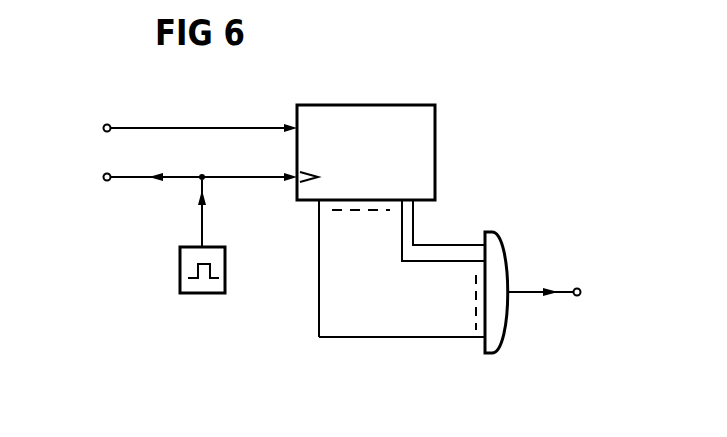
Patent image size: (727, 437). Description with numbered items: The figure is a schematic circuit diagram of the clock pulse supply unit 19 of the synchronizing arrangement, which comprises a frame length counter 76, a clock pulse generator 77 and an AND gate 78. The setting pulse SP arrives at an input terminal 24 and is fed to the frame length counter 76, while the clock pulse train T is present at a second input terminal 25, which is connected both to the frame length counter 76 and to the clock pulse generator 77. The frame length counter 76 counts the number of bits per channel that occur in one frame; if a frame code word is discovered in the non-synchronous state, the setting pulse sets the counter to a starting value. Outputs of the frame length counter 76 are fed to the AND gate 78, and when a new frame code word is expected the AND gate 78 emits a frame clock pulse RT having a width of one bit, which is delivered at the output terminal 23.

The clock pulse supply unit 19 is at (571, 159).
The output terminal 23 is at (557, 285).
The input terminal 24 is at (184, 123).
The input terminal 25 is at (184, 170).
The frame length counter 76 is at (394, 74).
The clock pulse generator 77 is at (217, 316).
The AND gate 78 is at (520, 343).